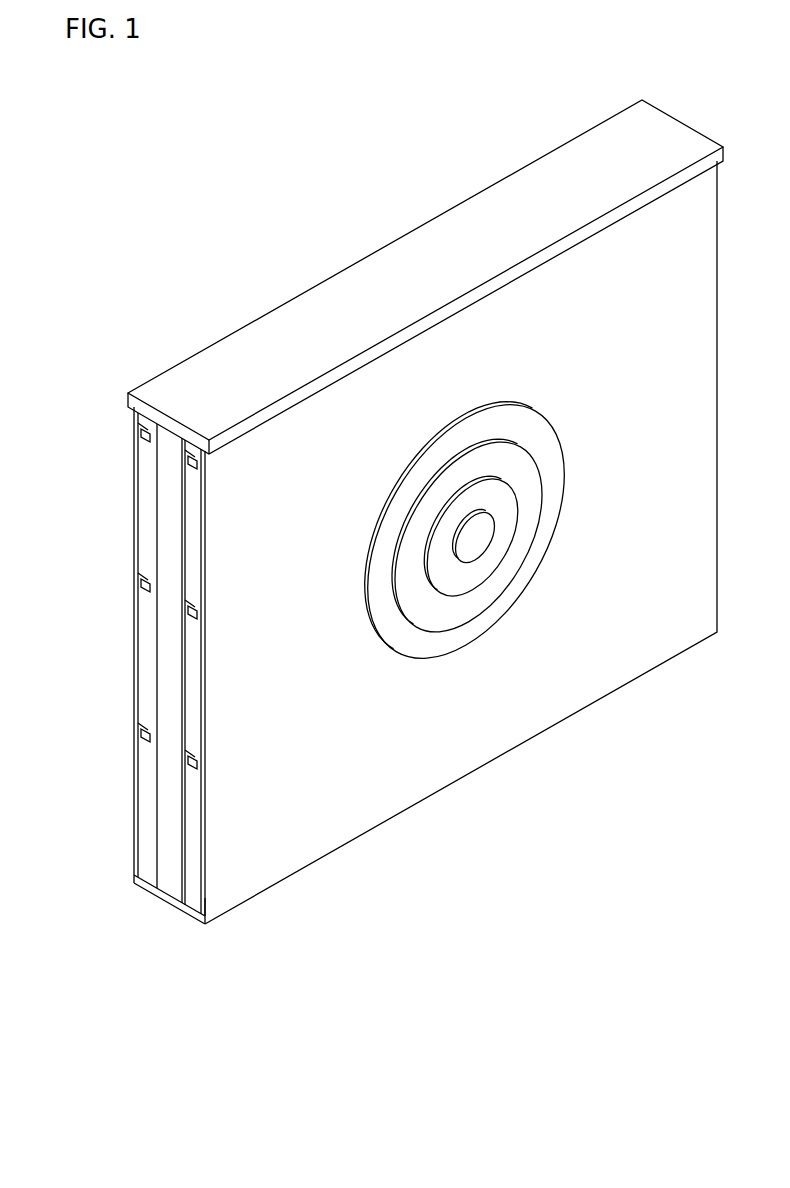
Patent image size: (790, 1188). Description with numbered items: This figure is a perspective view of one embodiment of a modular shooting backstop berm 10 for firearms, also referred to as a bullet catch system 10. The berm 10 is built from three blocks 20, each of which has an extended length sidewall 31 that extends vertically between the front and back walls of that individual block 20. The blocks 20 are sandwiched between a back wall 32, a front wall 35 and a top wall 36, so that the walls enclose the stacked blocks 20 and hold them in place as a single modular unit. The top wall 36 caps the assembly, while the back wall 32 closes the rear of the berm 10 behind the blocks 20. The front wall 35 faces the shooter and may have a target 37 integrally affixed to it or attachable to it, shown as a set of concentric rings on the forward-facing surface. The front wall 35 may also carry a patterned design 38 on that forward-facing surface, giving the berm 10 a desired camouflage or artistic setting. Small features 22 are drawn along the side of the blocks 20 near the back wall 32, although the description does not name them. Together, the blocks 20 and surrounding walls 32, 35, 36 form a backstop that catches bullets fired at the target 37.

The modular shooting backstop berm 10 is at (165, 230).
The block 20 is at (142, 472).
The fastener / hook 22 is at (138, 576).
The extended length sidewall 31 is at (168, 880).
The back wall 32 is at (132, 508).
The front wall 35 is at (565, 697).
The top wall 36 is at (518, 206).
The target 37 is at (547, 531).
The patterned design 38 is at (355, 790).